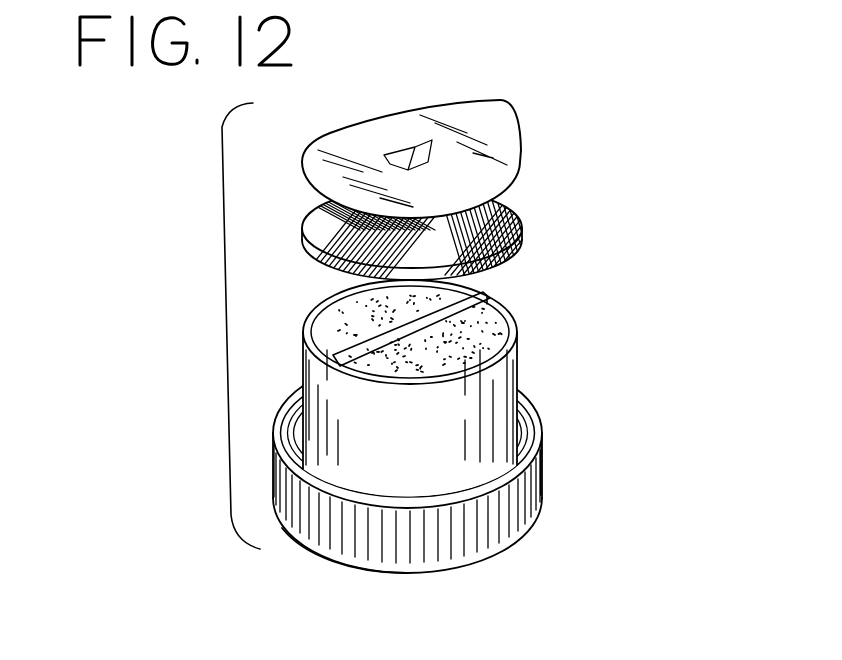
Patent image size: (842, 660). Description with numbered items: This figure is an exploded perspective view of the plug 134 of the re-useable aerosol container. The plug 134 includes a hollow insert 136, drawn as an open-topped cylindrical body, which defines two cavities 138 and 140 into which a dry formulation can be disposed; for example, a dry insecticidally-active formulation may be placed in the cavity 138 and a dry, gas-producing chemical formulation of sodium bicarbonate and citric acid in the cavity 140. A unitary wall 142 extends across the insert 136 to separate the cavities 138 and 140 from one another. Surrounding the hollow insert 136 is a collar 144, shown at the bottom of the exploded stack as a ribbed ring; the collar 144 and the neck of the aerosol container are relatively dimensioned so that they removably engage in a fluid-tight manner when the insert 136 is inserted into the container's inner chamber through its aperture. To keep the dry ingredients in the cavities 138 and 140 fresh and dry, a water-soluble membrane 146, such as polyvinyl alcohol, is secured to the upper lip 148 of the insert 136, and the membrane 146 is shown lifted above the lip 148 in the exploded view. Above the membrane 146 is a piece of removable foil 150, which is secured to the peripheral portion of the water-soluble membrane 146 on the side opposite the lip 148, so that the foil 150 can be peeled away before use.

The plug 134 is at (310, 552).
The hollow insert 136 is at (412, 435).
The cavity 138 is at (337, 305).
The cavity 140 is at (489, 300).
The unitary wall 142 is at (350, 337).
The collar 144 is at (545, 490).
The water-soluble membrane 146 is at (520, 212).
The upper lip 148 is at (515, 330).
The removable foil 150 is at (477, 104).